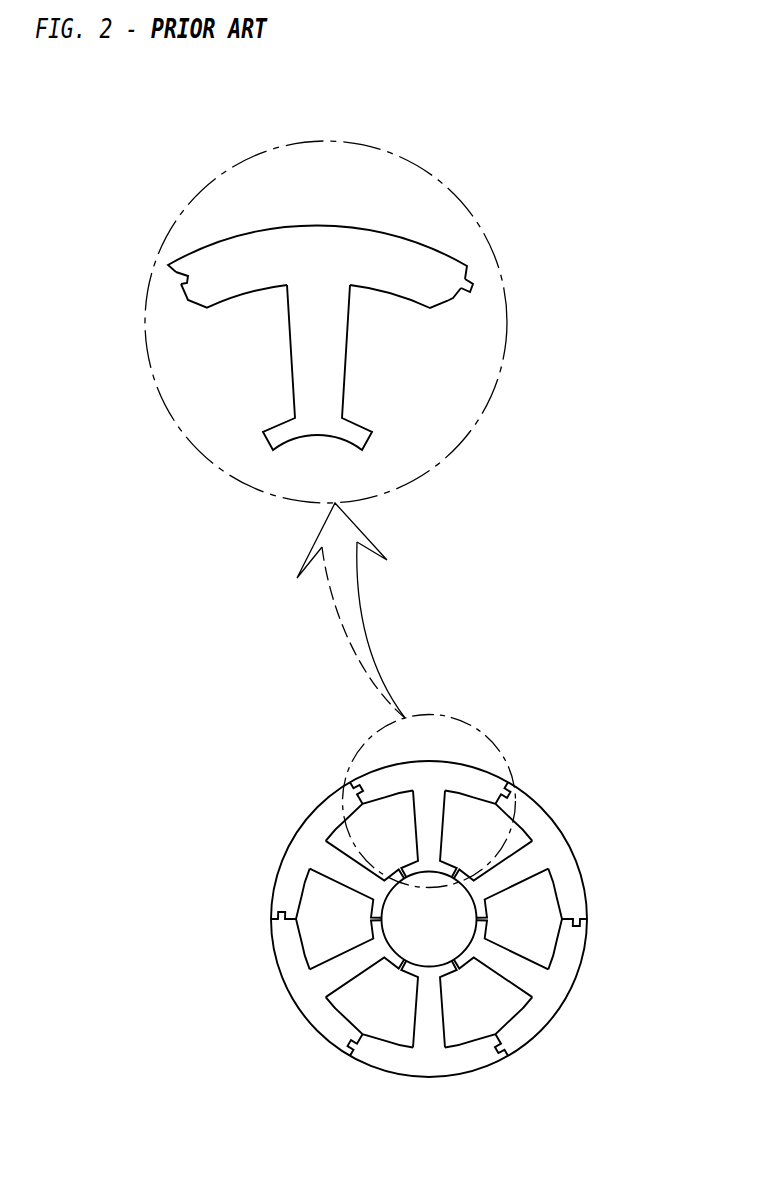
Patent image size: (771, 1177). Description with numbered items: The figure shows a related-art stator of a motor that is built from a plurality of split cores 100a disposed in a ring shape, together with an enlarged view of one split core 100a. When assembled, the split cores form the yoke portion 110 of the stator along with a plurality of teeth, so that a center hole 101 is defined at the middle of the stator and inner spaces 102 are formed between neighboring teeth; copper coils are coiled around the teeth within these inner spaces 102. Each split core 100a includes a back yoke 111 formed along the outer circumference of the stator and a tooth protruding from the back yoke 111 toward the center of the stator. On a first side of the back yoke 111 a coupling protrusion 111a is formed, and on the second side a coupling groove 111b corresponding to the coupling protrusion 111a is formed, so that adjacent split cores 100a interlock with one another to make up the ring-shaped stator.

The split core 100a is at (268, 361).
The center hole 101 is at (405, 922).
The inner space 102 is at (388, 1022).
The yoke portion 110 is at (441, 929).
The back yoke 111 is at (393, 253).
The coupling protrusion 111a is at (472, 285).
The coupling groove 111b is at (183, 280).